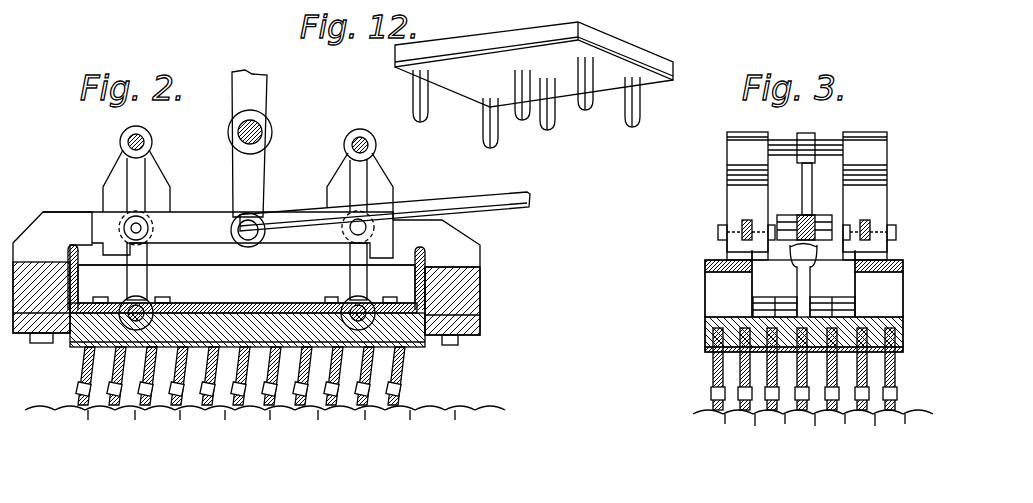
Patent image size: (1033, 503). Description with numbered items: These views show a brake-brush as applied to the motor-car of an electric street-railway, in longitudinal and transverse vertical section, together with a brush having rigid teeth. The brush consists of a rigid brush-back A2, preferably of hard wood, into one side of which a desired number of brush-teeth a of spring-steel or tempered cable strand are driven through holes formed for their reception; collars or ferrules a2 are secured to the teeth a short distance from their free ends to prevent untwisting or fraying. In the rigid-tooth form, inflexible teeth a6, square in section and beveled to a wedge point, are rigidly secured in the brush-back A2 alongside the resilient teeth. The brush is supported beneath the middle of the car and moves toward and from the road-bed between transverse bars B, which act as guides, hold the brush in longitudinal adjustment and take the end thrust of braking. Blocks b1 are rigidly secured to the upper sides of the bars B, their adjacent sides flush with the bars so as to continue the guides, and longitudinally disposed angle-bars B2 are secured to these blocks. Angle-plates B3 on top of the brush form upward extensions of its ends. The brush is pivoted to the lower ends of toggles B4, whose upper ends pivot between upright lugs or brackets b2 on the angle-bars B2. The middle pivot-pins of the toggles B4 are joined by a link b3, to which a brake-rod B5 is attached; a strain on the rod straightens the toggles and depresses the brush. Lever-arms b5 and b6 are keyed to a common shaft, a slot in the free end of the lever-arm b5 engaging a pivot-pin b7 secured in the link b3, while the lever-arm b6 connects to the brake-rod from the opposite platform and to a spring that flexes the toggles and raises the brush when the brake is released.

In FIG. 2, the transverse bars B is at (481, 330).
In FIG. 3, the transverse bars B is at (804, 301).
In FIG. 2, the angle-bars B2 is at (445, 232).
In FIG. 3, the angle-bars B2 is at (742, 232).
In FIG. 2, the angle-plates B3 is at (92, 235).
In FIG. 3, the angle-plates B3 is at (830, 270).
In FIG. 2, the toggles B4 is at (133, 178).
In FIG. 3, the toggles B4 is at (803, 198).
In FIG. 2, the brake-rod B5 is at (458, 210).
In FIG. 2, the blocks b1 is at (40, 278).
In FIG. 3, the blocks b1 is at (720, 292).
In FIG. 2, the upright lugs or brackets b2 is at (160, 178).
In FIG. 3, the upright lugs or brackets b2 is at (727, 170).
In FIG. 2, the link b3 is at (188, 228).
In FIG. 3, the link b3 is at (796, 262).
In FIG. 2, the lever-arm b5 is at (256, 182).
In FIG. 2, the lever-arm b6 is at (255, 95).
In FIG. 2, the pivot-pin b7 is at (246, 247).
In FIG. 2, the brush-back A2 is at (247, 330).
In FIG. 12, the brush-back A2 is at (603, 40).
In FIG. 3, the brush-back A2 is at (705, 330).
In FIG. 2, the brush-teeth a is at (80, 368).
In FIG. 12, the brush-teeth a is at (534, 53).
In FIG. 3, the brush-teeth a is at (713, 373).
In FIG. 2, the collars or ferrules a2 is at (72, 390).
In FIG. 12, the collars or ferrules a2 is at (623, 62).
In FIG. 3, the collars or ferrules a2 is at (710, 393).
In FIG. 12, the inflexible teeth a6 is at (485, 135).